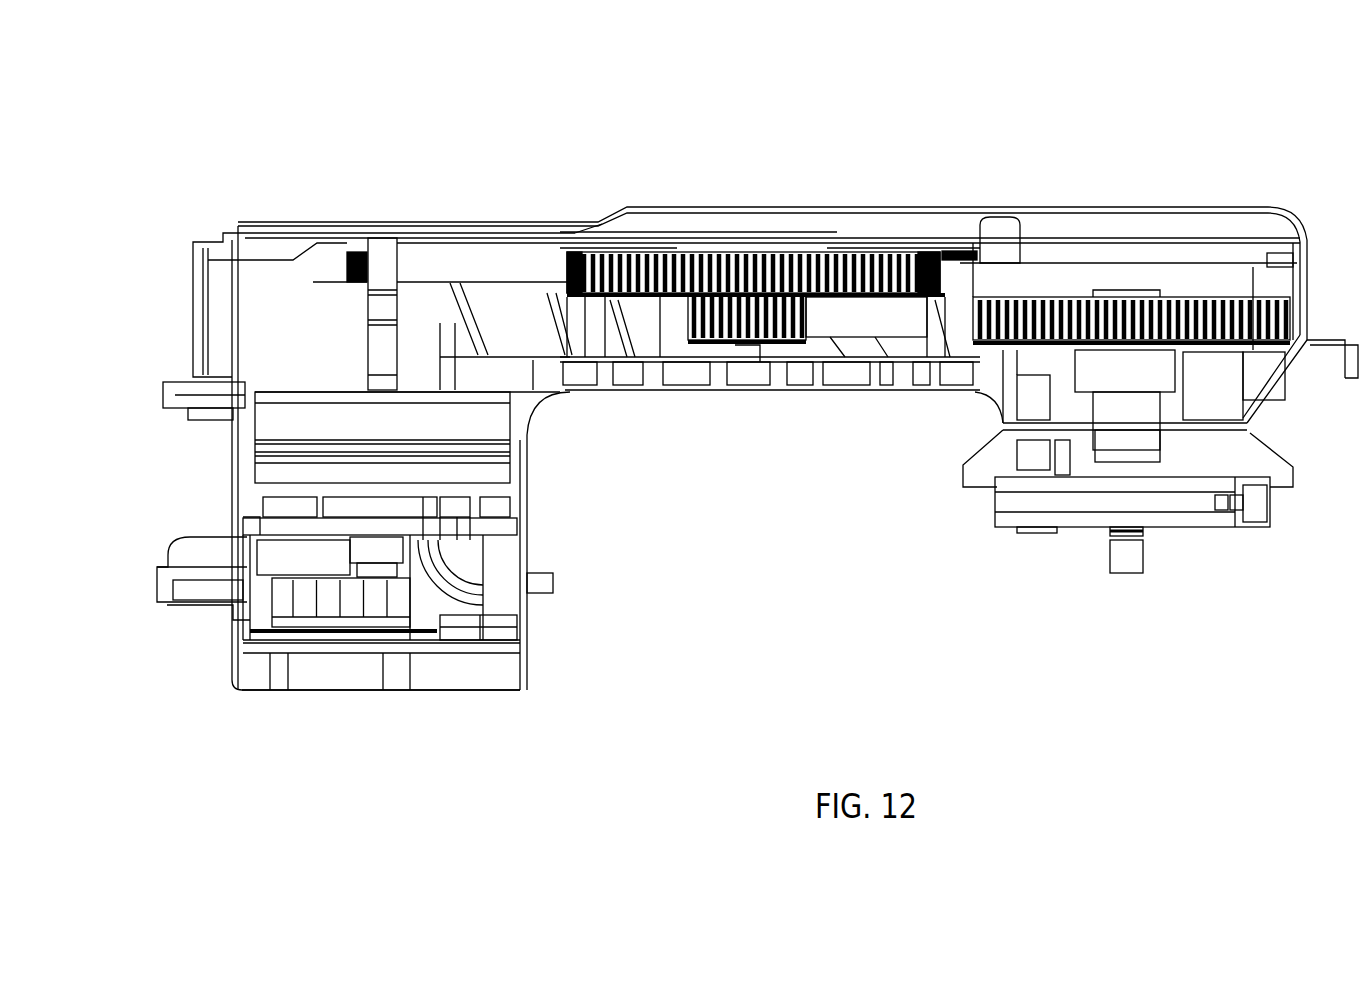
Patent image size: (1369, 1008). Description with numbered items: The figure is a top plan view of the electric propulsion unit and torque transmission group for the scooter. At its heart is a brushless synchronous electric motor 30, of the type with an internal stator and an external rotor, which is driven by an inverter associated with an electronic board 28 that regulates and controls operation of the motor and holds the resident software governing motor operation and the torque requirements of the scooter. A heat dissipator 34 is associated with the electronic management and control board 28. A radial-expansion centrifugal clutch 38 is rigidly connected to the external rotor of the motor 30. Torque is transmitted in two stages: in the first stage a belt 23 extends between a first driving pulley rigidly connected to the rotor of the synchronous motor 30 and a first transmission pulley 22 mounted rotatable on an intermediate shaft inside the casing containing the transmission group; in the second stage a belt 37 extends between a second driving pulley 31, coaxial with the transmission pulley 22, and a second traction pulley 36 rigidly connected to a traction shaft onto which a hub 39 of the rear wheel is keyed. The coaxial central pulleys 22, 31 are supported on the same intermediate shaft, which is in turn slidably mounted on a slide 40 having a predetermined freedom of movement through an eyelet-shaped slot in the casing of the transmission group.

The first transmission pulley 22 is at (650, 258).
The belt 23 is at (478, 268).
The electronic board 28 is at (265, 599).
The brushless synchronous electric motor 30 is at (296, 425).
The second driving pulley 31 is at (750, 363).
The heat dissipator 34 is at (380, 692).
The second traction pulley 36 is at (1180, 325).
The belt 37 is at (925, 325).
The radial-expansion centrifugal clutch 38 is at (525, 537).
The hub 39 is at (1142, 563).
The slide 40 is at (750, 308).